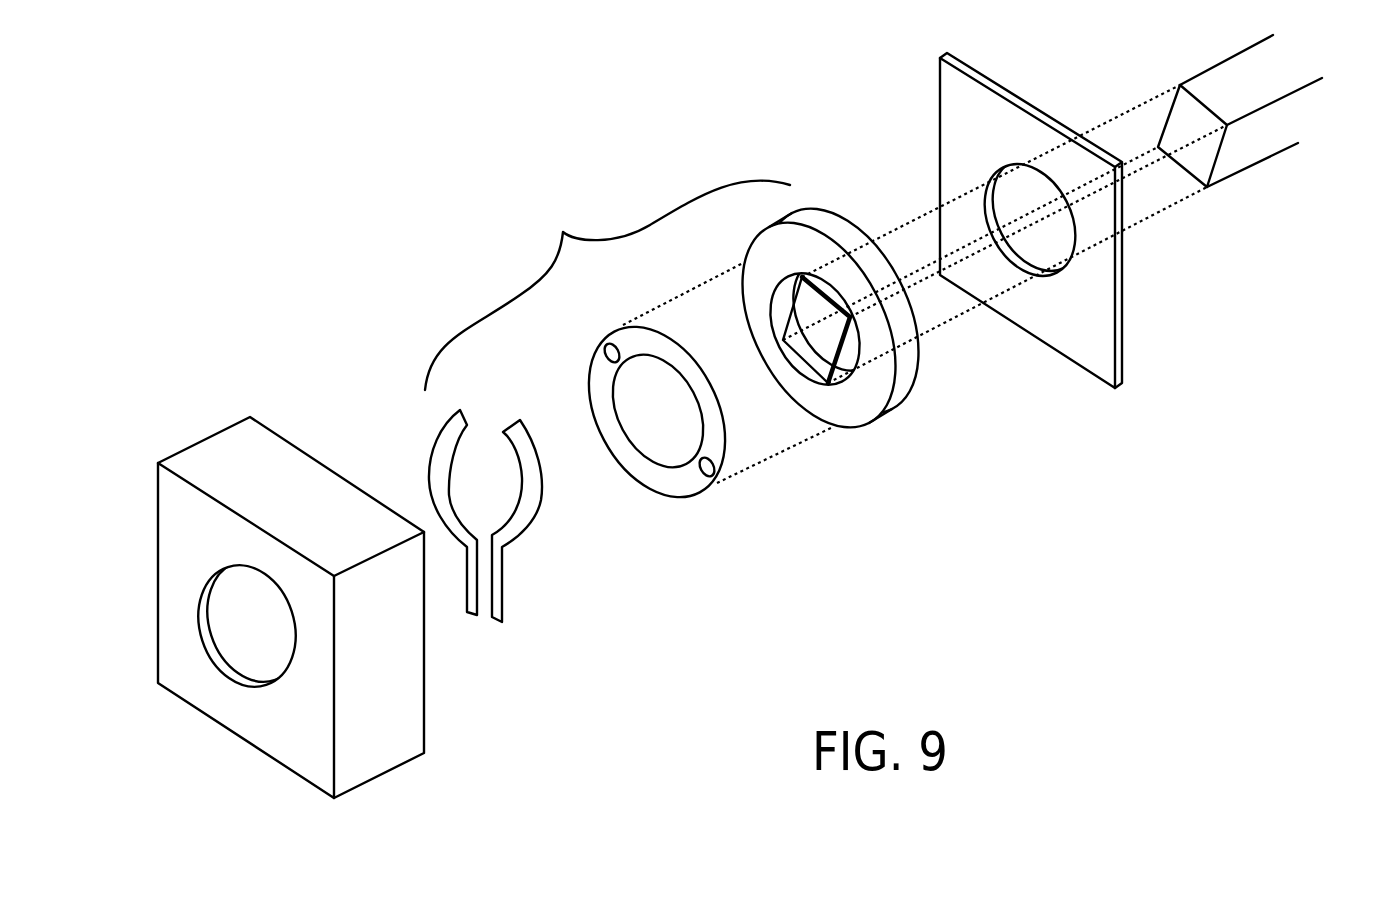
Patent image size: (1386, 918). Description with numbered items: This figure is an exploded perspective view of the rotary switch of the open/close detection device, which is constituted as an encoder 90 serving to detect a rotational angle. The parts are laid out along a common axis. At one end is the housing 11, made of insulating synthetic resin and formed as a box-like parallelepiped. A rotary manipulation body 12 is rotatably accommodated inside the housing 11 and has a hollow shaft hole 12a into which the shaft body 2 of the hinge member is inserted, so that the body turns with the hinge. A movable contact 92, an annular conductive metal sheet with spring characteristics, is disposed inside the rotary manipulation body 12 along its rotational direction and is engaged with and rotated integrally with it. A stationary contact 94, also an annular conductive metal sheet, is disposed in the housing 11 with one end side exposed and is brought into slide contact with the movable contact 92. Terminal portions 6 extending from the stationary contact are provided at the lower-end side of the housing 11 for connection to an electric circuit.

The shaft body 2 is at (1257, 163).
The terminal portions 6 is at (531, 597).
The housing 11 is at (385, 775).
The rotary manipulation body 12 is at (864, 365).
The hollow shaft hole 12a is at (815, 355).
The encoder 90 is at (607, 285).
The movable contact 92 is at (695, 496).
The stationary contact 94 is at (510, 553).